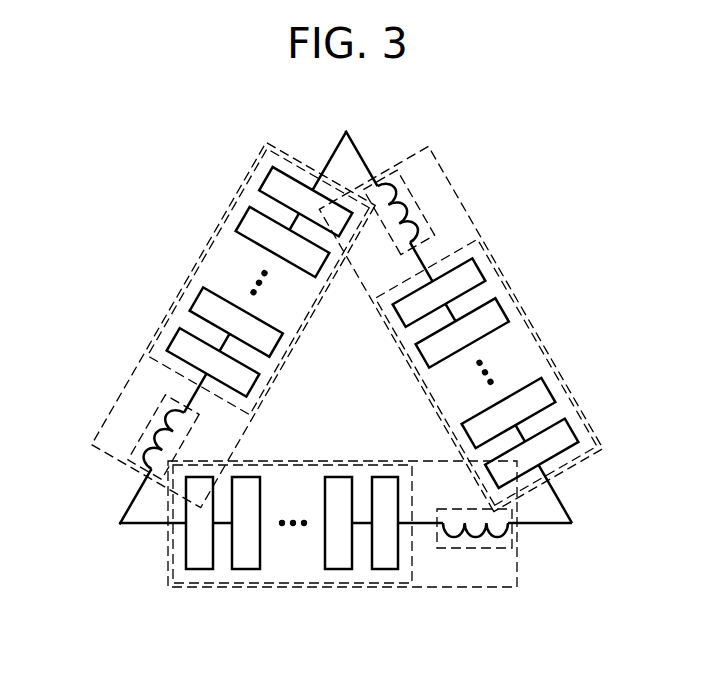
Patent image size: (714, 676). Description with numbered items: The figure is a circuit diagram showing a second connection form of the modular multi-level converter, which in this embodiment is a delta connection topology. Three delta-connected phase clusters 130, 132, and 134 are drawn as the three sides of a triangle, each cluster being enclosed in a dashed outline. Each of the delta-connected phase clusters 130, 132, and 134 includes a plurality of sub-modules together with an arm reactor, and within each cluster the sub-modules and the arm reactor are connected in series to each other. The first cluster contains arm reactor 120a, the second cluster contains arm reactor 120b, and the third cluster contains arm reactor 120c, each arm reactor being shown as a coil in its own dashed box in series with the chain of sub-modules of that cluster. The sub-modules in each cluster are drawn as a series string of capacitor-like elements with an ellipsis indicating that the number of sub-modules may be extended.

The arm reactor 120a is at (140, 430).
The arm reactor 120b is at (450, 202).
The arm reactor 120c is at (483, 550).
The delta-connected phase cluster 130 is at (137, 363).
The delta-connected phase cluster 132 is at (475, 225).
The delta-connected phase cluster 134 is at (424, 588).